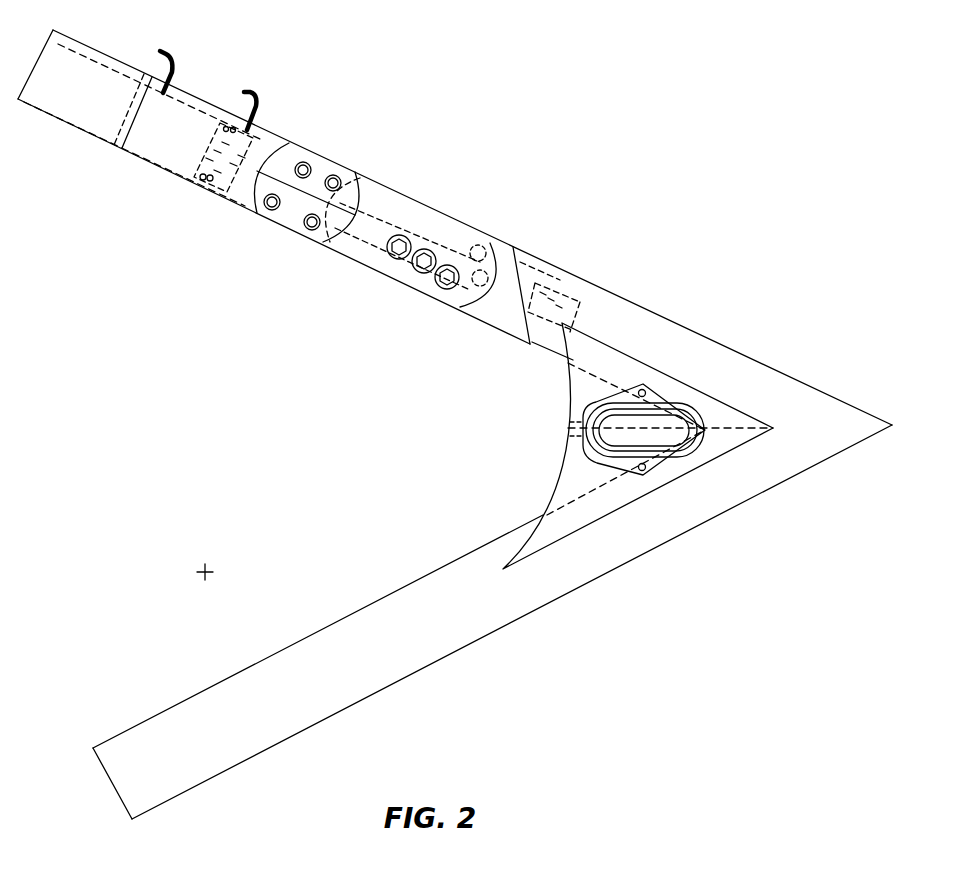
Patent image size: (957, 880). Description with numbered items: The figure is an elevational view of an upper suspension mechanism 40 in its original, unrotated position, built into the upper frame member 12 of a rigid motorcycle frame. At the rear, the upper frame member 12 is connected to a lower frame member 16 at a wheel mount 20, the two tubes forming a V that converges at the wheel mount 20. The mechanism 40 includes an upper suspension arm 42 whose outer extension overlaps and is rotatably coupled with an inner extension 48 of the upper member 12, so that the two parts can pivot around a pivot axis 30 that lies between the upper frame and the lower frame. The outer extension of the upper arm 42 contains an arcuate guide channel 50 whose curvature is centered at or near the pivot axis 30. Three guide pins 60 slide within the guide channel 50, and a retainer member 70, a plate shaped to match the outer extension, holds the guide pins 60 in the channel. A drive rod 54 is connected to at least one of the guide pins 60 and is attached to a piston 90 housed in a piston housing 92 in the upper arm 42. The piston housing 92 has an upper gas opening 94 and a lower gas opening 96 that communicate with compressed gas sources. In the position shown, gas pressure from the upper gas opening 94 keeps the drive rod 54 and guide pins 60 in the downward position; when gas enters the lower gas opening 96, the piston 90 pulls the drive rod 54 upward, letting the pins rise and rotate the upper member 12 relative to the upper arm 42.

The upper frame member 12 is at (703, 335).
The lower frame member 16 is at (705, 520).
The wheel mount 20 is at (880, 402).
The pivot axis 30 is at (200, 572).
The upper suspension mechanism 40 is at (512, 117).
The upper suspension arm 42 is at (235, 202).
The inner extension 48 is at (510, 312).
The guide channel 50 is at (370, 215).
The drive rod 54 is at (290, 163).
The guide pins 60 is at (400, 262).
The retainer member 70 is at (295, 222).
The piston 90 is at (205, 183).
The piston housing 92 is at (150, 142).
The upper gas opening 94 is at (163, 52).
The lower gas opening 96 is at (248, 92).